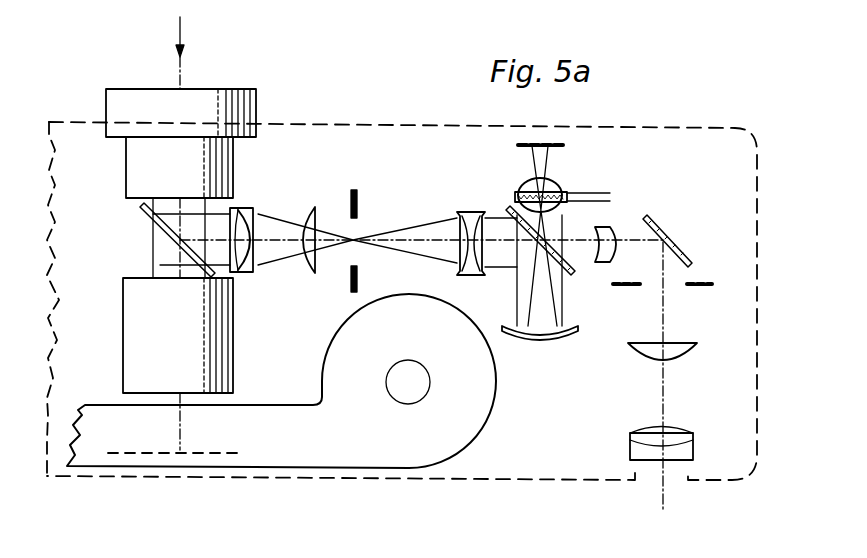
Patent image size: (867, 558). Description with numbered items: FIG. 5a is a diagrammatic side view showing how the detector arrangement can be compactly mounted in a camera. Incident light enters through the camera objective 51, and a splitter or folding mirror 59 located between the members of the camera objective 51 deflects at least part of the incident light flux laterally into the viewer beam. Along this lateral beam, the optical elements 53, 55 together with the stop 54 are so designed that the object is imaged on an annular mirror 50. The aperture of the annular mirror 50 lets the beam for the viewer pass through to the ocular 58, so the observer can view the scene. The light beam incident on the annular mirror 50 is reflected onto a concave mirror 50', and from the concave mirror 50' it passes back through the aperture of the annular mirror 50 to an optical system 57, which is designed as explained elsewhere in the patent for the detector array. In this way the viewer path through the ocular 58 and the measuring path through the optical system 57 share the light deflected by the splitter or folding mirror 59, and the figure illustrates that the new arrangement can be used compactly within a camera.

The camera objective 51 is at (118, 330).
The splitter or folding mirror 59 is at (150, 212).
The optical element 53 is at (253, 253).
The stop 54 is at (351, 195).
The optical element 55 is at (470, 212).
The optical system 57 is at (511, 179).
The annular mirror 50 is at (554, 256).
The concave mirror 50' is at (540, 350).
The ocular 58 is at (635, 447).